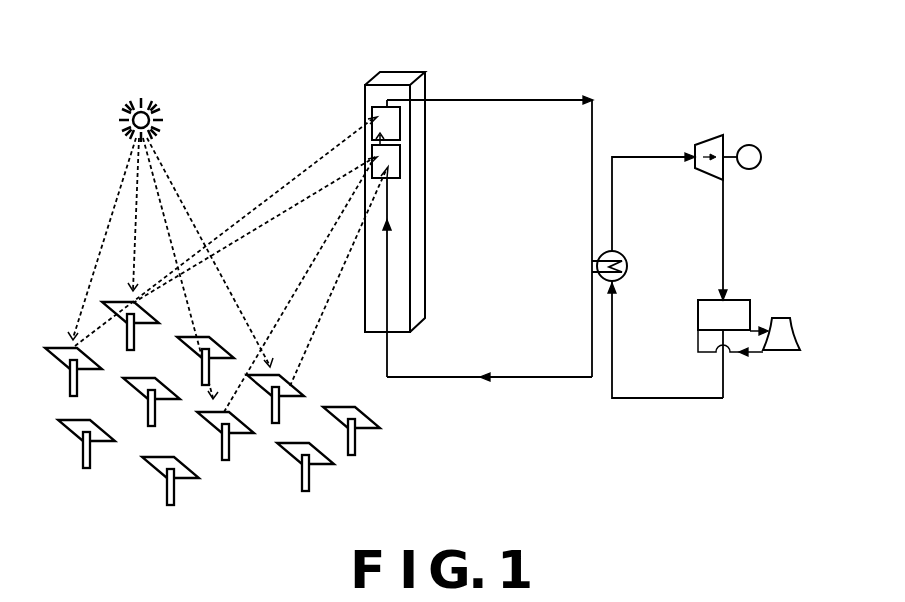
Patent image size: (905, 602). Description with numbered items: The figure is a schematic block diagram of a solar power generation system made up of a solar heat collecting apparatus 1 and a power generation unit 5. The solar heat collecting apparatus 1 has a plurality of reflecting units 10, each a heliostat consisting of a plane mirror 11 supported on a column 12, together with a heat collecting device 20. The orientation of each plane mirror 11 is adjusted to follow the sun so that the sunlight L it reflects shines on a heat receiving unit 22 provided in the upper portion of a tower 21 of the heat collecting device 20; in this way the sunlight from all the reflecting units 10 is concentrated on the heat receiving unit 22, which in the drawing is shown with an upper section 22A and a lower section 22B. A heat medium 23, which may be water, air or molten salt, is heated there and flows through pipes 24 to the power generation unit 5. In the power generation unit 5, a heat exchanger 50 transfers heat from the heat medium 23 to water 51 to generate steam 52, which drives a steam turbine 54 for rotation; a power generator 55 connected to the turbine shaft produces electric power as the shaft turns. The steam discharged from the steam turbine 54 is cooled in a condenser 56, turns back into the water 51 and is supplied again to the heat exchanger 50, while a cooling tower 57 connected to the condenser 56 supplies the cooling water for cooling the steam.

The solar heat collecting apparatus 1 is at (305, 98).
The sunlight L is at (107, 229).
The power generation unit 5 is at (653, 100).
The reflecting unit 10 is at (403, 450).
The plane mirror 11 is at (322, 460).
The column 12 is at (307, 485).
The heat collecting device 20 is at (405, 66).
The tower 21 is at (425, 252).
The heat receiving unit 22 is at (495, 117).
The upper receiver section 22A is at (400, 123).
The lower receiver section 22B is at (400, 160).
The heat medium 23 is at (482, 89).
The pipes 24 is at (552, 380).
The heat exchanger 50 is at (627, 263).
The water 51 is at (687, 388).
The steam 52 is at (625, 193).
The steam turbine 54 is at (708, 145).
The power generator 55 is at (763, 147).
The condenser 56 is at (740, 300).
The cooling tower 57 is at (800, 342).